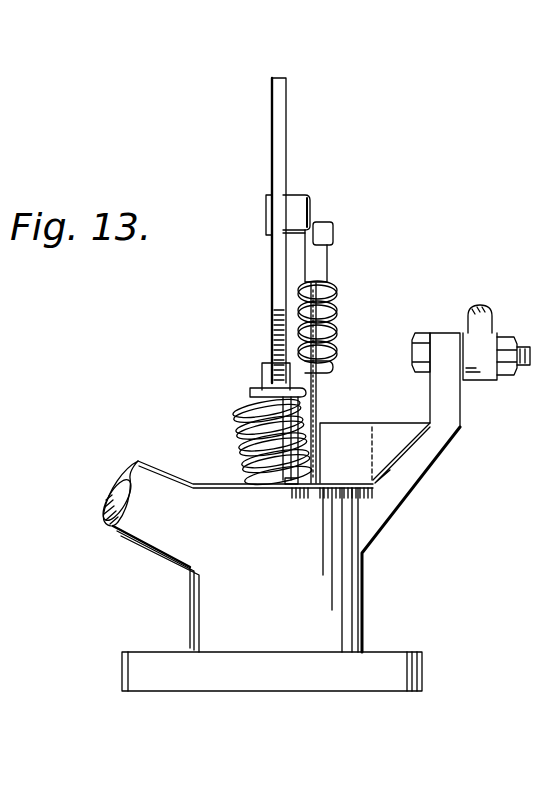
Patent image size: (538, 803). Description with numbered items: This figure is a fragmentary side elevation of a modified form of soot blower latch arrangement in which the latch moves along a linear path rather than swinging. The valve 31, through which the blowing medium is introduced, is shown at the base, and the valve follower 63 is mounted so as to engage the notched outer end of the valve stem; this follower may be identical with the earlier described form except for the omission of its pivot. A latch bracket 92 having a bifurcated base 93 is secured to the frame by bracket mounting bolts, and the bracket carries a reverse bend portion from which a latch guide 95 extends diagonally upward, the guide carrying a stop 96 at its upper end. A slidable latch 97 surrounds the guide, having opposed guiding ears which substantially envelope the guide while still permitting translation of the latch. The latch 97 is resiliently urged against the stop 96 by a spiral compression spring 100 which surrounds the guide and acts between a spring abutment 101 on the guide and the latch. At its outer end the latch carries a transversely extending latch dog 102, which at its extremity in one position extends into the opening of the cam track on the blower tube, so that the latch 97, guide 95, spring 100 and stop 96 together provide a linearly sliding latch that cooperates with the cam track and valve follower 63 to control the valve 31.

The valve 31 is at (210, 592).
The valve follower 63 is at (270, 300).
The latch bracket 92 is at (430, 395).
The bifurcated base 93 is at (430, 333).
The latch guide 95 is at (318, 402).
The stop 96 is at (335, 229).
The slidable latch 97 is at (330, 262).
The spiral compression spring 100 is at (337, 318).
The spring abutment 101 is at (334, 373).
The latch dog 102 is at (300, 207).